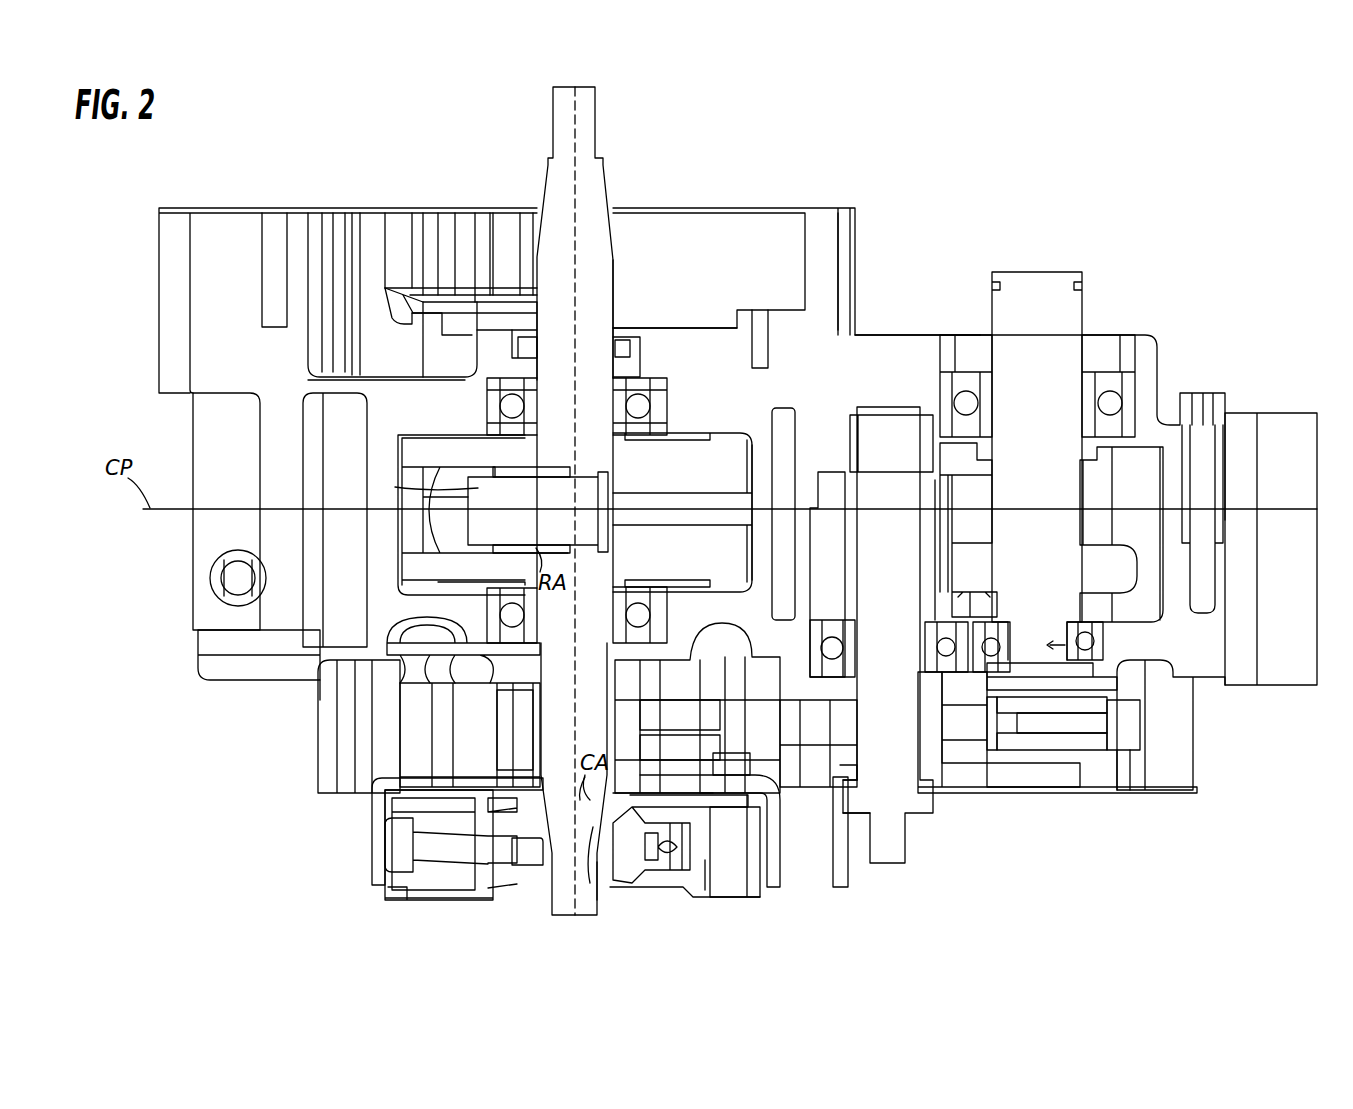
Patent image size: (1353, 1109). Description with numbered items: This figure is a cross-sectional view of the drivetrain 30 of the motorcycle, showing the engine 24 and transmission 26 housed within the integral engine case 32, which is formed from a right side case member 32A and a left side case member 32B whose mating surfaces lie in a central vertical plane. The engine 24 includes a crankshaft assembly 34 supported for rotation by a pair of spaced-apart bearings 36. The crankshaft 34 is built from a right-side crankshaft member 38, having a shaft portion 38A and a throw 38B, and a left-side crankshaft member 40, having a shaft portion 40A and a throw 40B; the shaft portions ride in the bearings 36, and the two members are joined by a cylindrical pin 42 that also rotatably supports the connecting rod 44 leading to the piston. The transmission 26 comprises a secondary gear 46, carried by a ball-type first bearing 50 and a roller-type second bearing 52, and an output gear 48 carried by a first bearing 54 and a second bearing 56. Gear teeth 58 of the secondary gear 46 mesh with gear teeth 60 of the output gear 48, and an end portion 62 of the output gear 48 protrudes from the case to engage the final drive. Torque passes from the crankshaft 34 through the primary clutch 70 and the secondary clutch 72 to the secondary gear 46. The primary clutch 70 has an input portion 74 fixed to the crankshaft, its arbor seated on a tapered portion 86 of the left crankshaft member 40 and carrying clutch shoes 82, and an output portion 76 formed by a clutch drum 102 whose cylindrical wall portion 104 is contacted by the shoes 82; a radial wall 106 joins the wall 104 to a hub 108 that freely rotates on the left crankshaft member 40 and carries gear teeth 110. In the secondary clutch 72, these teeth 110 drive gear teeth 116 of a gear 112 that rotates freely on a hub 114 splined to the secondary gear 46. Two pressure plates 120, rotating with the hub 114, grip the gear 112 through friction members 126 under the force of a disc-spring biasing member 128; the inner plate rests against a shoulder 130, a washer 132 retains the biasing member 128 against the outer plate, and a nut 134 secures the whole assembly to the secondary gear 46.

The engine 24 is at (293, 705).
The transmission 26 is at (940, 258).
The drivetrain 30 is at (815, 185).
The engine case 32 is at (238, 195).
The right side case member 32A is at (298, 220).
The left side case member 32B is at (232, 688).
The crankshaft assembly 34 is at (620, 292).
The bearings 36 is at (668, 405).
The right-side crankshaft member 38 is at (603, 255).
The shaft portion 38A is at (600, 333).
The throw 38B is at (720, 447).
The left-side crankshaft member 40 is at (560, 727).
The shaft portion 40A is at (545, 665).
The throw 40B is at (735, 575).
The pin 42 is at (508, 470).
The connecting rod 44 is at (470, 505).
The secondary gear 46 is at (875, 412).
The output gear 48 is at (1063, 345).
The first bearing 50 is at (830, 647).
The second bearing 52 is at (837, 430).
The first bearing 54 is at (1105, 648).
The second bearing 56 is at (1145, 420).
The gear teeth 58 is at (820, 490).
The gear teeth 60 is at (948, 545).
The end portion 62 is at (1057, 280).
The primary clutch 70 is at (330, 800).
The secondary clutch 72 is at (950, 825).
The input portion 74 is at (450, 915).
The output portion 76 is at (350, 880).
The clutch shoes 82 is at (405, 890).
The tapered portion 86 is at (595, 825).
The clutch drum 102 is at (783, 855).
The cylindrical wall portion 104 is at (775, 825).
The radial wall 106 is at (770, 775).
The hub 108 is at (640, 768).
The gear teeth 110 is at (510, 716).
The gear 112 is at (1118, 790).
The hub 114 is at (935, 750).
The gear teeth 116 is at (1140, 737).
The pressure plates 120 is at (1050, 715).
The friction members 126 is at (1110, 740).
The biasing member 128 is at (985, 780).
The shoulder 130 is at (990, 700).
The washer 132 is at (838, 780).
The nut 134 is at (855, 805).